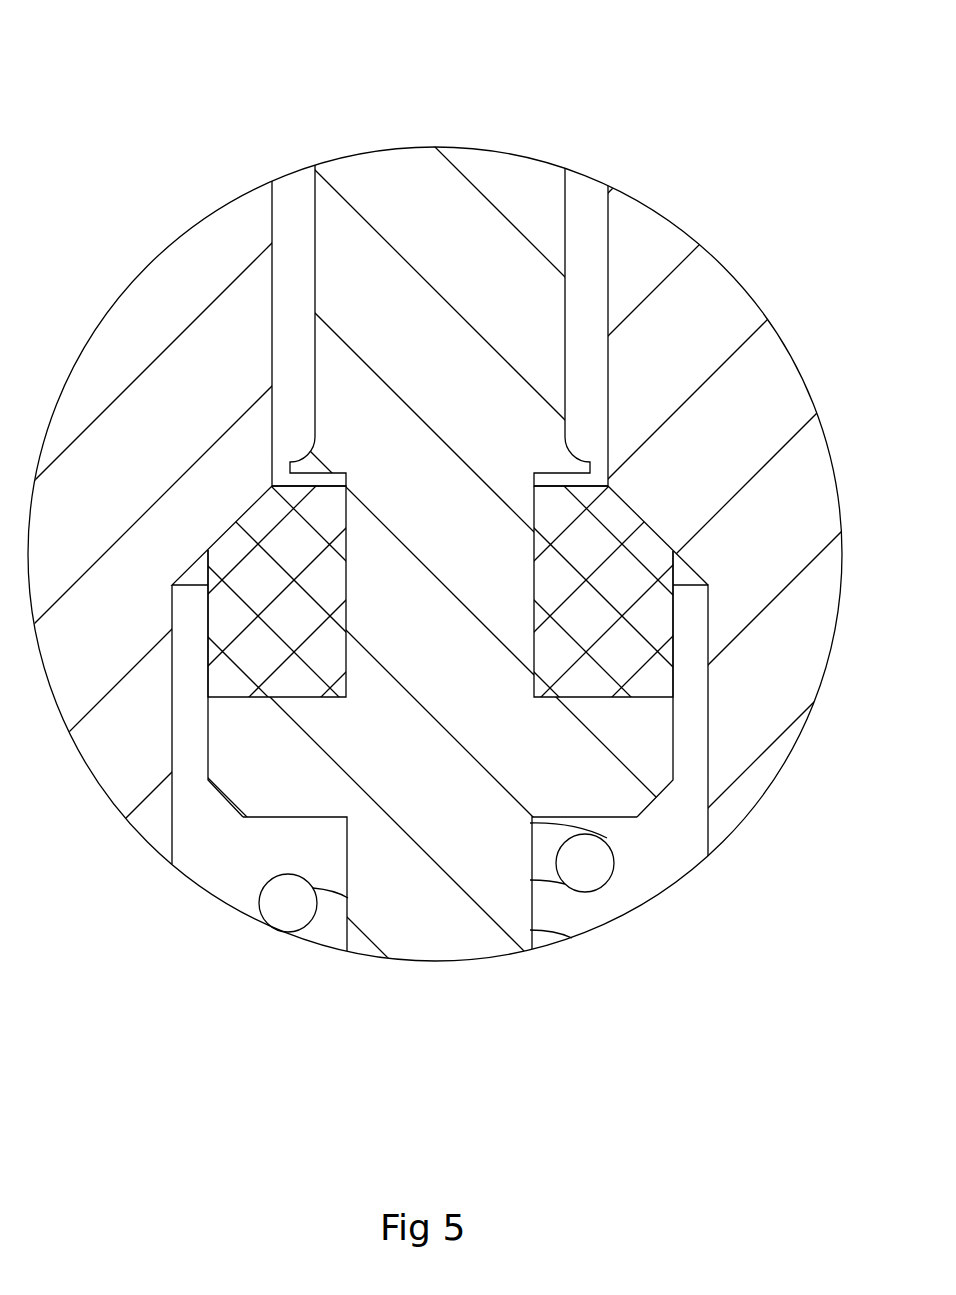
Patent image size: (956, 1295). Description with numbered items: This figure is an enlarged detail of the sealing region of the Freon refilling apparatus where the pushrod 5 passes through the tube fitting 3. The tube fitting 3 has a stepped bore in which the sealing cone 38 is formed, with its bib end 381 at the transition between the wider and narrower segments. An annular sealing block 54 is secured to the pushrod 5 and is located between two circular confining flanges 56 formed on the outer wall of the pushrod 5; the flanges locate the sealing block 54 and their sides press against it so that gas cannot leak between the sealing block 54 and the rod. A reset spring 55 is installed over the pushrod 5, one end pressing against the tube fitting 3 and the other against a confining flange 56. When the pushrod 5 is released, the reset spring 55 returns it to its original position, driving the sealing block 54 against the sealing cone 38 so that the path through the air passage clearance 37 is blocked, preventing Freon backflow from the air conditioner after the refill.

The tube fitting 3 is at (135, 460).
The air passage clearance 37 is at (293, 280).
The pushrod 5 is at (432, 333).
The confining flange 56 is at (577, 463).
The sealing cone 38 is at (652, 517).
The bib end 381 is at (695, 568).
The sealing block 54 is at (600, 597).
The reset spring 55 is at (293, 907).